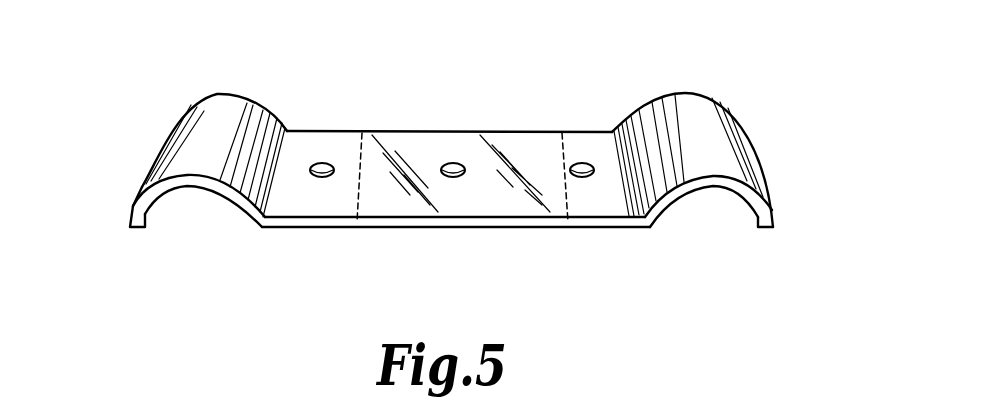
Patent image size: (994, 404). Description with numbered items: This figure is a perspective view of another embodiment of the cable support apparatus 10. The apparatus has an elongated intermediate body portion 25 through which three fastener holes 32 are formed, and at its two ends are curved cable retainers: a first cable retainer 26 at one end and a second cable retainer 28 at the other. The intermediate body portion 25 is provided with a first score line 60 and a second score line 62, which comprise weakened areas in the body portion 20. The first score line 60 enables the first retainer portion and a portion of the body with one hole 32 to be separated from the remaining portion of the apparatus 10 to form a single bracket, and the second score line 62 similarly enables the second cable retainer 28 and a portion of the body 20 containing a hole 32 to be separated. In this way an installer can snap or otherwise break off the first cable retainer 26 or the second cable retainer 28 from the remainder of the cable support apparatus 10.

The cable support apparatus 10 is at (452, 163).
The body portion 20 is at (464, 163).
The intermediate body portion 25 is at (390, 142).
The first cable retainer 26 is at (146, 164).
The second cable retainer 28 is at (756, 152).
The fastener holes 32 is at (315, 162).
The first score line 60 is at (356, 229).
The second score line 62 is at (572, 231).